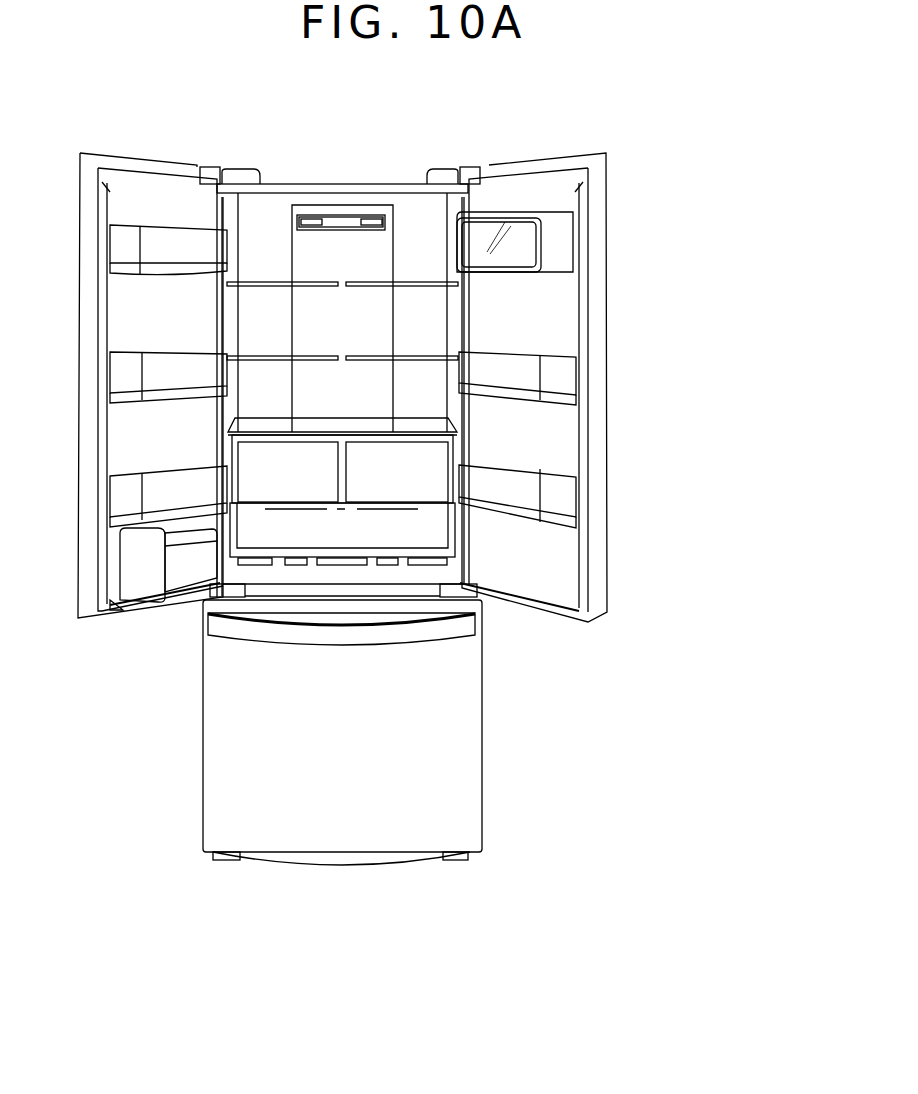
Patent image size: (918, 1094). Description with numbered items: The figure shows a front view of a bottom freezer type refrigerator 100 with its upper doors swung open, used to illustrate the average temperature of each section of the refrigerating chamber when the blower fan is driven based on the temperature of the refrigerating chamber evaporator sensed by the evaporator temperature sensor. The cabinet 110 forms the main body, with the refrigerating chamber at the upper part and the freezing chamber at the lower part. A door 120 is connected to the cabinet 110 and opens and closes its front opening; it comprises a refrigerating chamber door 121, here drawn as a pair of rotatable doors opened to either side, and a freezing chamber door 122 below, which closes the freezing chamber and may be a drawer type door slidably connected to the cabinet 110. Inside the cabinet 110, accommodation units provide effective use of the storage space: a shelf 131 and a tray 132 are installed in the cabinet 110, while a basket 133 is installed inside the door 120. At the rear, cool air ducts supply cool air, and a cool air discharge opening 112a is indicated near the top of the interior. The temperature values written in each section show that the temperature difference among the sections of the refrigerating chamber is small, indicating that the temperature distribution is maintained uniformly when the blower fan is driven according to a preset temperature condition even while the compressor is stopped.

The refrigerator 100 is at (650, 145).
The cabinet 110 is at (393, 188).
The cool air discharge opening 112a is at (383, 220).
The door 120 is at (692, 561).
The refrigerating chamber door 121 is at (597, 582).
The freezing chamber door 122 is at (458, 684).
The shelf 131 is at (450, 284).
The tray 132 is at (432, 458).
The basket 133 is at (562, 243).